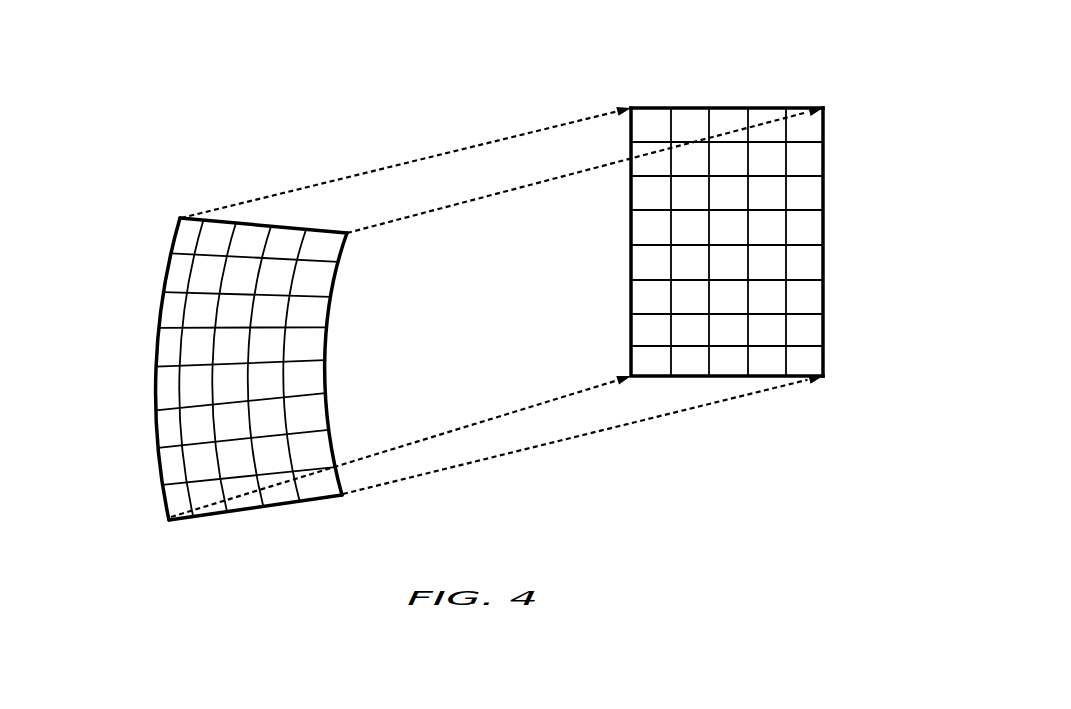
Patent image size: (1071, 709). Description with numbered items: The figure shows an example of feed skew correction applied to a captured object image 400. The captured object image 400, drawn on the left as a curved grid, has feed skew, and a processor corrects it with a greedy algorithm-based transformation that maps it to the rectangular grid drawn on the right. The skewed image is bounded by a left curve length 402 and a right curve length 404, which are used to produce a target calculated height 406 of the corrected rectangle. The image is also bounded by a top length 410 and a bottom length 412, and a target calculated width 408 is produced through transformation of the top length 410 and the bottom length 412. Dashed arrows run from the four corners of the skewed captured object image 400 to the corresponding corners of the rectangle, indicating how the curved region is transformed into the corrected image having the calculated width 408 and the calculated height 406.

The captured object image 400 is at (281, 197).
The left curve length 402 is at (158, 416).
The right curve length 404 is at (329, 371).
The target calculated height 406 is at (877, 265).
The target calculated width 408 is at (760, 62).
The top length 410 is at (222, 222).
The bottom length 412 is at (252, 508).